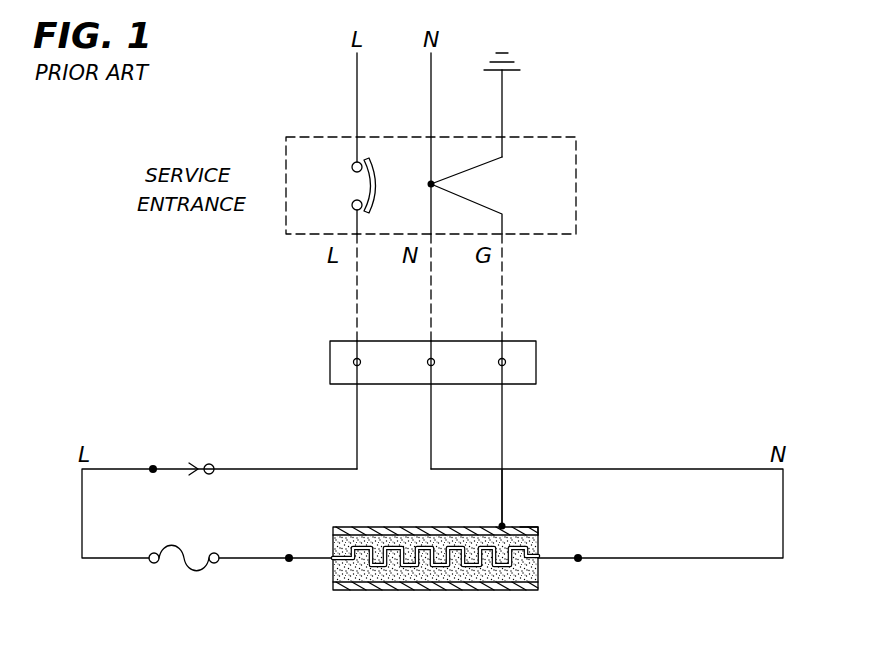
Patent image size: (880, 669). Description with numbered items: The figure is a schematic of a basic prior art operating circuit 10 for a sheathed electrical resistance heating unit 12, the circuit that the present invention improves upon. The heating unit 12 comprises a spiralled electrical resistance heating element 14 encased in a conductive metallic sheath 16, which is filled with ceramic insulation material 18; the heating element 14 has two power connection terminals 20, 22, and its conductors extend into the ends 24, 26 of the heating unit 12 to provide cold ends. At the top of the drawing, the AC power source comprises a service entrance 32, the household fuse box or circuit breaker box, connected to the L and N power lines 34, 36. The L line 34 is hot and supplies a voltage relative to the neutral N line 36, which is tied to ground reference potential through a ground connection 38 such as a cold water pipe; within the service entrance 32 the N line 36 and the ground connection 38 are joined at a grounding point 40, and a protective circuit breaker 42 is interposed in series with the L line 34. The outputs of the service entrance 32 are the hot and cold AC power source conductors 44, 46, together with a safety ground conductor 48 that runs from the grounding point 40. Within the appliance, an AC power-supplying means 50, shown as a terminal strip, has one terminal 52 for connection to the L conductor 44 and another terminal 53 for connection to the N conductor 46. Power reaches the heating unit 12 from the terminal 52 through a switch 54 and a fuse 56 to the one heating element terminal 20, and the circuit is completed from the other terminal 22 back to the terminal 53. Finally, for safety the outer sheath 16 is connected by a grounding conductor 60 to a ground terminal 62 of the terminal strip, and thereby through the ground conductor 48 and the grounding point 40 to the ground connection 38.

The operating circuit 10 is at (140, 140).
The sheathed electrical resistance heating unit 12 is at (345, 598).
The electrical resistance heating element 14 is at (406, 568).
The conductive metallic sheath 16 is at (508, 586).
The ceramic insulation material 18 is at (385, 544).
The power connection terminal 20 is at (288, 562).
The power connection terminal 22 is at (580, 558).
The end of heating unit 24 is at (346, 528).
The end of heating unit 26 is at (540, 531).
The service entrance 32 is at (578, 166).
The L power line 34 is at (356, 95).
The N power line 36 is at (430, 93).
The ground connection 38 is at (509, 71).
The grounding point 40 is at (429, 184).
The protective circuit breaker 42 is at (349, 182).
The AC power source conductor 44 is at (357, 331).
The AC power source conductor 46 is at (430, 330).
The ground conductor 48 is at (504, 331).
The AC power-supplying means 50 is at (538, 375).
The terminal 52 is at (354, 363).
The terminal strip terminal 53 is at (434, 360).
The switch 54 is at (170, 468).
The fuse 56 is at (184, 564).
The grounding conductor 60 is at (502, 498).
The ground terminal 62 is at (506, 362).